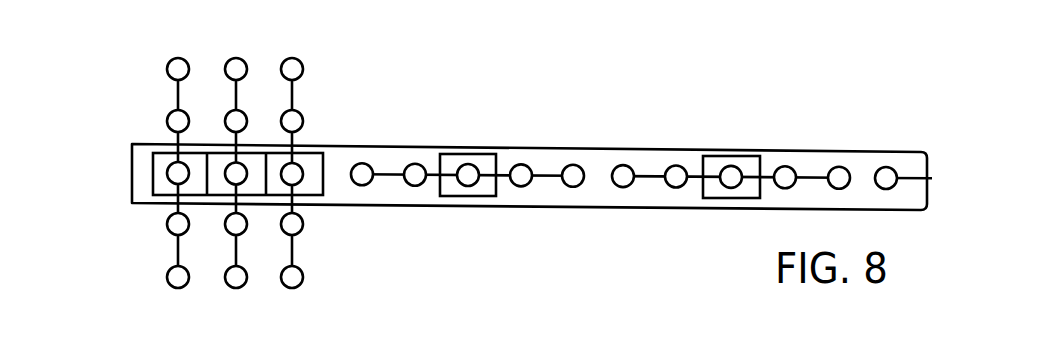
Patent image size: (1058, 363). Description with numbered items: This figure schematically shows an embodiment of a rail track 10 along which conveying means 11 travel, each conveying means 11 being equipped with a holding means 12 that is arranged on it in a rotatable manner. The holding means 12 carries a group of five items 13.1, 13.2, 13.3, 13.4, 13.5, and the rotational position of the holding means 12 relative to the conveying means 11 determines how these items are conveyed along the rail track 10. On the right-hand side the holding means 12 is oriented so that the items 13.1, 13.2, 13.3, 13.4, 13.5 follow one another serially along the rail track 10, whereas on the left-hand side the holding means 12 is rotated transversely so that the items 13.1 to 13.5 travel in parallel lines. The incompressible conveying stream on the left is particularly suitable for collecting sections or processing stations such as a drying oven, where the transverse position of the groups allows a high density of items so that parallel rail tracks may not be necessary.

The rail track 10 is at (599, 192).
The conveying means 11 is at (305, 158).
The holding means 12 is at (295, 248).
The item 13.1 is at (166, 277).
The item 13.2 is at (166, 224).
The item 13.3 is at (167, 172).
The item 13.4 is at (166, 121).
The item 13.5 is at (167, 68).